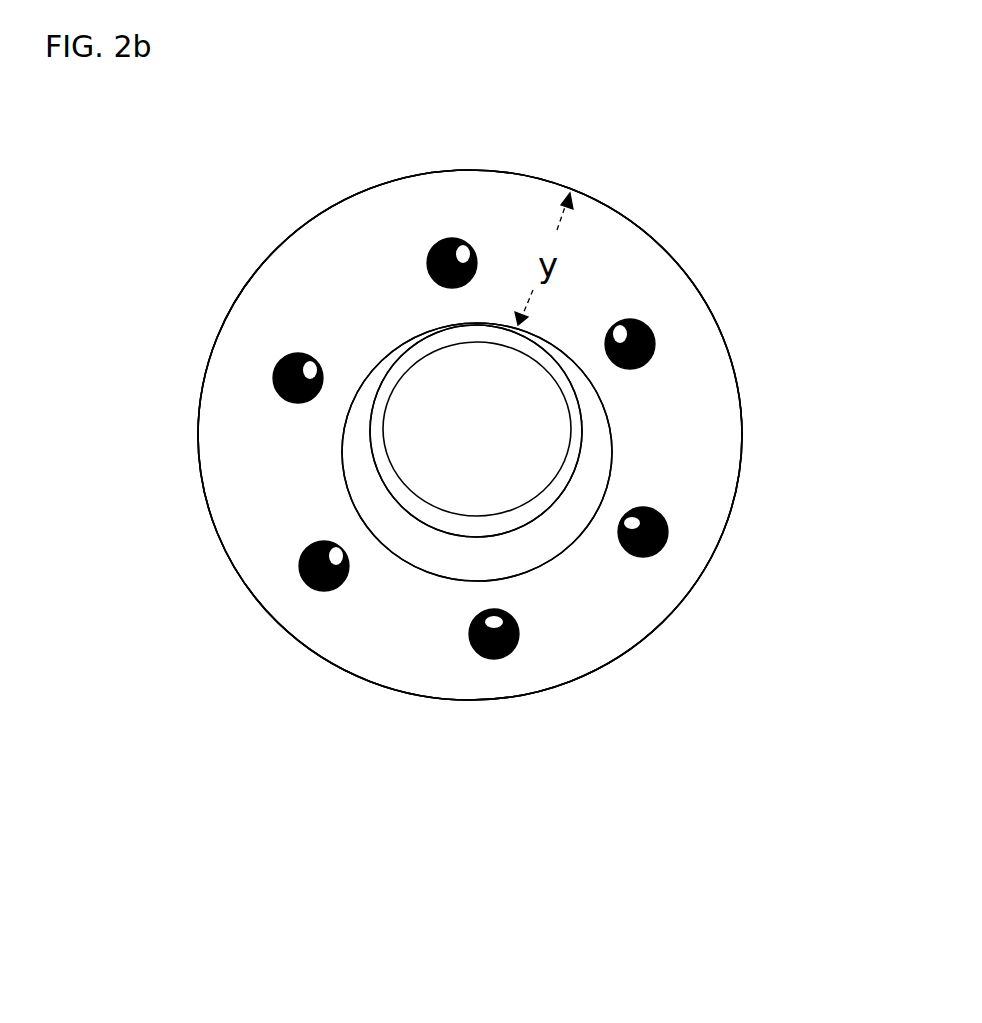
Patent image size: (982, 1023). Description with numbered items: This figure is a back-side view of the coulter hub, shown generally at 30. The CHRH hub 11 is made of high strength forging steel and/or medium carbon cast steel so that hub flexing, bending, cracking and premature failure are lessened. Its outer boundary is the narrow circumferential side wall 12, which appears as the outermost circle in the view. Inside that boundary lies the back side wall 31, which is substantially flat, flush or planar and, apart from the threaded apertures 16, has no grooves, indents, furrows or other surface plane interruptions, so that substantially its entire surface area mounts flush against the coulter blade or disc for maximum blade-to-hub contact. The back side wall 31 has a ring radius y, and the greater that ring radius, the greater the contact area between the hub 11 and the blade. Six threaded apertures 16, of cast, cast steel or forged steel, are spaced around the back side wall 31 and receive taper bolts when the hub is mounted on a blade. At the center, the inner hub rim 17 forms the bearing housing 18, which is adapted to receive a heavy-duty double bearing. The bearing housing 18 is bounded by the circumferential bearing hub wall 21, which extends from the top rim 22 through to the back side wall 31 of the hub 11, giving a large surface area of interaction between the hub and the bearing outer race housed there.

The back-side view of the hub 30 is at (206, 215).
The CHRH hub 11 is at (486, 157).
The circumferential side wall 12 is at (697, 582).
The back side wall 31 is at (690, 435).
The bearing housing 18 is at (425, 408).
The inner hub rim 17 is at (385, 473).
The top rim 22 is at (426, 494).
The circumferential bearing hub wall 21 is at (487, 557).
The threaded apertures 16 is at (655, 343).